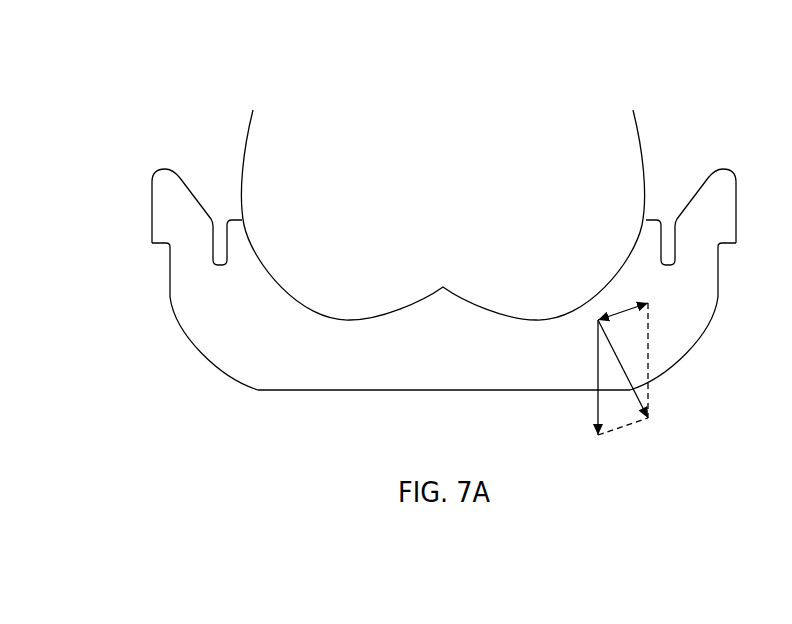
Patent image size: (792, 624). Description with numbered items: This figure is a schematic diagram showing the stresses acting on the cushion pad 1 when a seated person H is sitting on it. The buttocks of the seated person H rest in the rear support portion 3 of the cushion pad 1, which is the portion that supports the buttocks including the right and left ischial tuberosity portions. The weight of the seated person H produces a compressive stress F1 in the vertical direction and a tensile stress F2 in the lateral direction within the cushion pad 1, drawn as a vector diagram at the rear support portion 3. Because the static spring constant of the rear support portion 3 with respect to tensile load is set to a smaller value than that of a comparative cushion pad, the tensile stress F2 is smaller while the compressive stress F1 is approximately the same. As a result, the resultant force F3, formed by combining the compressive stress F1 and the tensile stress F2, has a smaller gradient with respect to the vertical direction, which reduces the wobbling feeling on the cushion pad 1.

The cushion pad 1 is at (446, 250).
The rear support portion 3 is at (367, 373).
The seated person H is at (247, 130).
The compressive stress F1 is at (616, 395).
The tensile stress F2 is at (638, 350).
The resultant force F3 is at (639, 380).